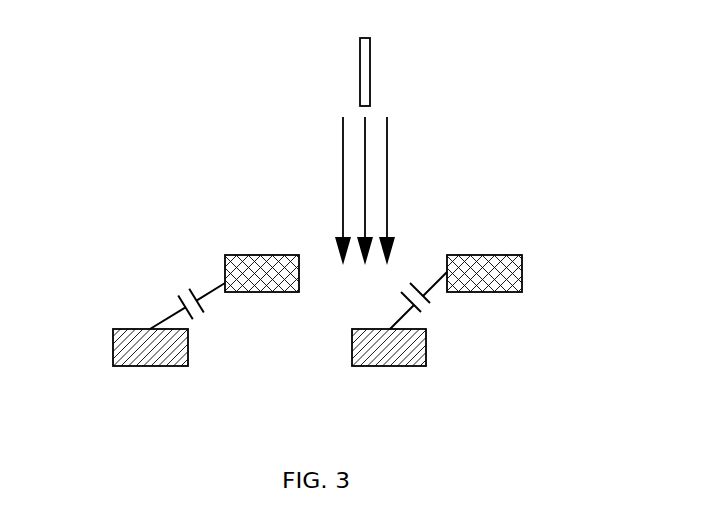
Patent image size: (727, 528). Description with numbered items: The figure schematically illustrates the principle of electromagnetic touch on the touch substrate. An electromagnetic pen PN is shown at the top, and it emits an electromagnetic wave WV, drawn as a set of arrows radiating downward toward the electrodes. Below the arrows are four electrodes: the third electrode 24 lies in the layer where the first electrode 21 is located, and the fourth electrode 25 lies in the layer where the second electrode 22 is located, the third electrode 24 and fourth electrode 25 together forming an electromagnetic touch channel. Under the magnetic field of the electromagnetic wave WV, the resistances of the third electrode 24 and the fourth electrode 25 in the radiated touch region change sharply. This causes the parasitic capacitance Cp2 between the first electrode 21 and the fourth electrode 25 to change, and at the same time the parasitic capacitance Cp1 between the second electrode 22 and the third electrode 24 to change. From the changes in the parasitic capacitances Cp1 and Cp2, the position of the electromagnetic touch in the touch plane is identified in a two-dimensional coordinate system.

The electromagnetic pen PN is at (347, 75).
The electromagnetic wave WV is at (330, 164).
The first electrode 21 is at (152, 352).
The second electrode 22 is at (491, 270).
The third electrode 24 is at (373, 352).
The fourth electrode 25 is at (271, 267).
The parasitic capacitance Cp1 is at (435, 311).
The parasitic capacitance Cp2 is at (187, 292).